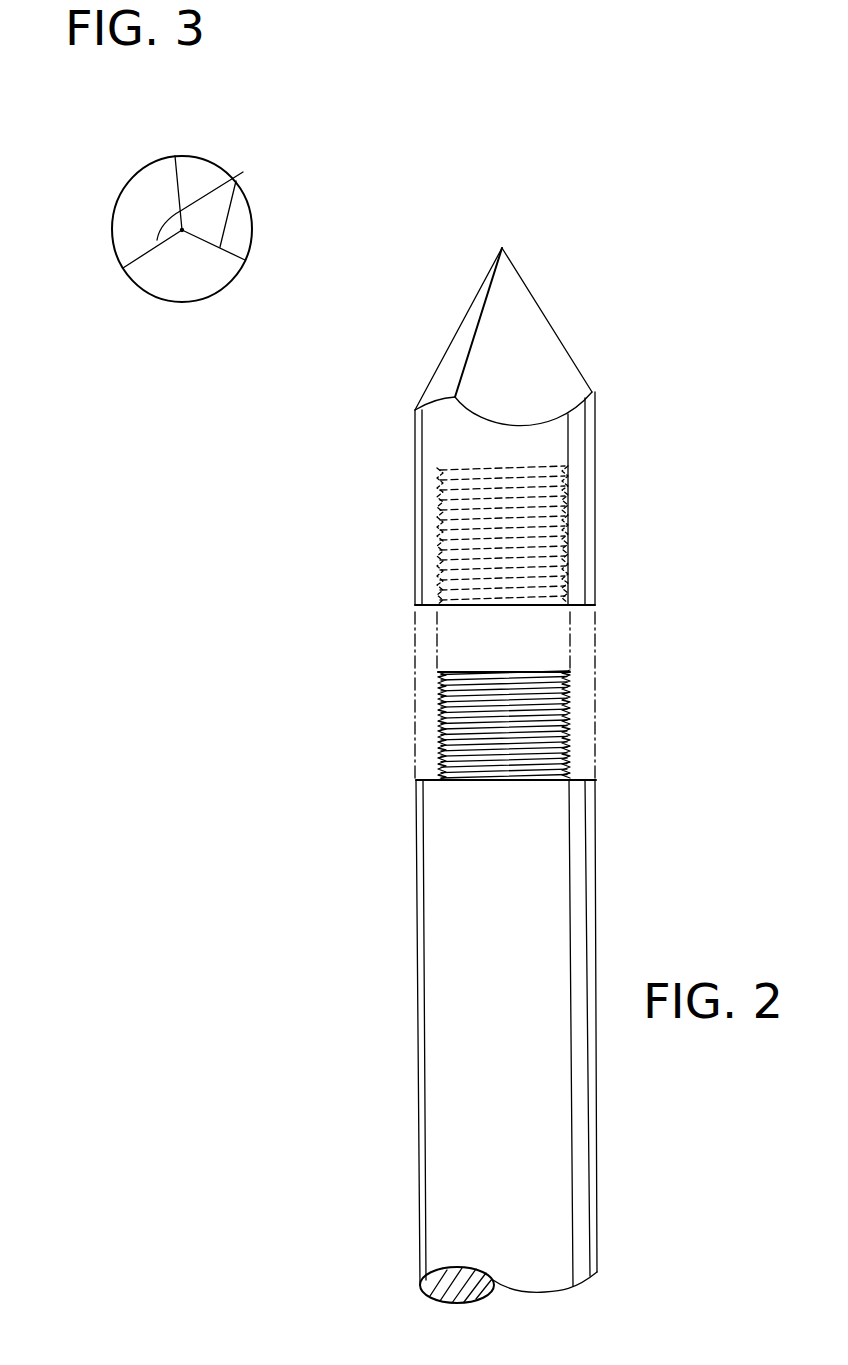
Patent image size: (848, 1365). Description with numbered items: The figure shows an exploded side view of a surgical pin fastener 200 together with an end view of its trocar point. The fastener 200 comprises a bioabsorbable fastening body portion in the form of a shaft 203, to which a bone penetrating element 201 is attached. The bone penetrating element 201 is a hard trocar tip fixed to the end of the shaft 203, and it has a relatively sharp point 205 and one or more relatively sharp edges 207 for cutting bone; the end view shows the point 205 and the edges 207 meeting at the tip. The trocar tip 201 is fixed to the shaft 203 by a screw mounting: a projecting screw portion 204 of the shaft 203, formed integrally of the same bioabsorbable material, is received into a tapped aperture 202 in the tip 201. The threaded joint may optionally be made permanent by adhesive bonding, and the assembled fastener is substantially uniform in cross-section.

In FIG. 2, the surgical pin fastener 200 is at (276, 848).
In FIG. 3, the bone penetrating element 201 is at (128, 187).
In FIG. 2, the bone penetrating element 201 is at (415, 505).
In FIG. 2, the tapped aperture 202 is at (567, 525).
In FIG. 2, the shaft 203 is at (375, 665).
In FIG. 2, the projecting screw portion 204 is at (572, 697).
In FIG. 3, the point 205 is at (182, 230).
In FIG. 2, the point 205 is at (502, 243).
In FIG. 3, the edges 207 is at (178, 181).
In FIG. 2, the edges 207 is at (473, 333).